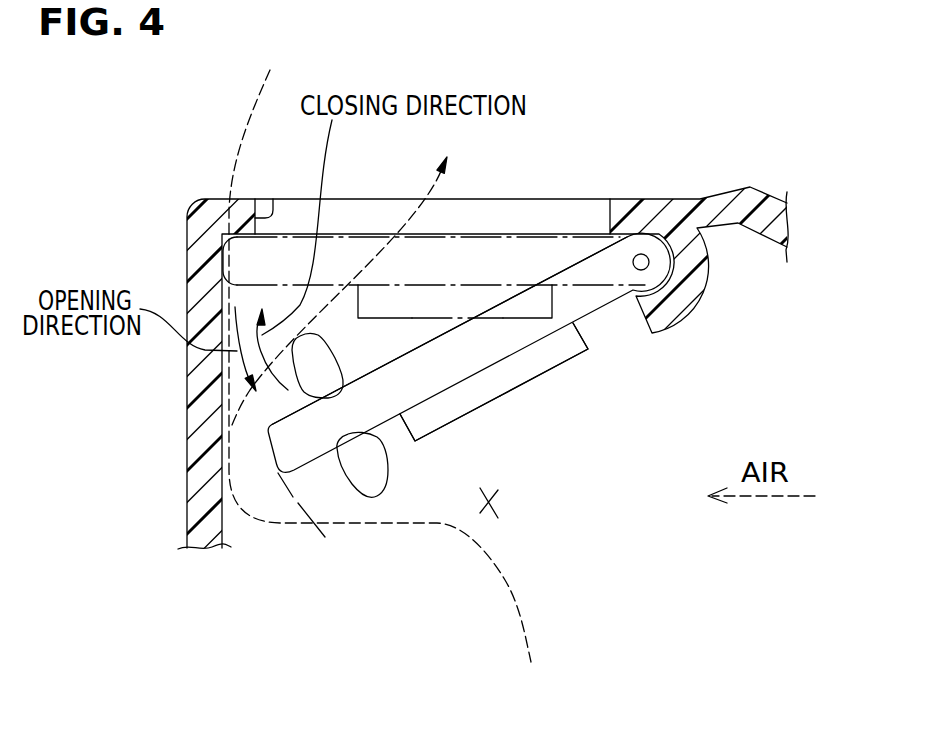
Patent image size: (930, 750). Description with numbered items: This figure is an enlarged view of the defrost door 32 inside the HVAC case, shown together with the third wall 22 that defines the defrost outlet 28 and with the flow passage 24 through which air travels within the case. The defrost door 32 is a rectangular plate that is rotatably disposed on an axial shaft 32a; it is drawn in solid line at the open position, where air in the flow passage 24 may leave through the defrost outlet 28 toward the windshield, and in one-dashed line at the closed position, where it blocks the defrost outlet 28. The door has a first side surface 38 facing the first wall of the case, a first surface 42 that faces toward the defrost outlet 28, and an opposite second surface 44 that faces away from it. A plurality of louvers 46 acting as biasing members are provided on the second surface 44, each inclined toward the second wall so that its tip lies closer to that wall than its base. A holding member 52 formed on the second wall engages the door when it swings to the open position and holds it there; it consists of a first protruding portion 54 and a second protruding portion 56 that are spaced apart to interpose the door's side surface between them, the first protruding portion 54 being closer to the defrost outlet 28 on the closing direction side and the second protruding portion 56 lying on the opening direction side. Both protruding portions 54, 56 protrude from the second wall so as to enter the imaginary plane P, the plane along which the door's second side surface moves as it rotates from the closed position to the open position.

The third wall 22 is at (710, 207).
The flow passage 24 is at (497, 500).
The defrost outlet 28 is at (273, 199).
The defrost door 32 is at (570, 234).
The axial shaft 32a is at (642, 253).
The first side surface 38 is at (497, 350).
The first surface 42 is at (427, 342).
The second surface 44 is at (558, 333).
The louver 46 is at (450, 413).
The holding member 52 is at (423, 601).
The first protruding portion 54 is at (317, 387).
The second protruding portion 56 is at (360, 473).
The imaginary plane P is at (245, 398).